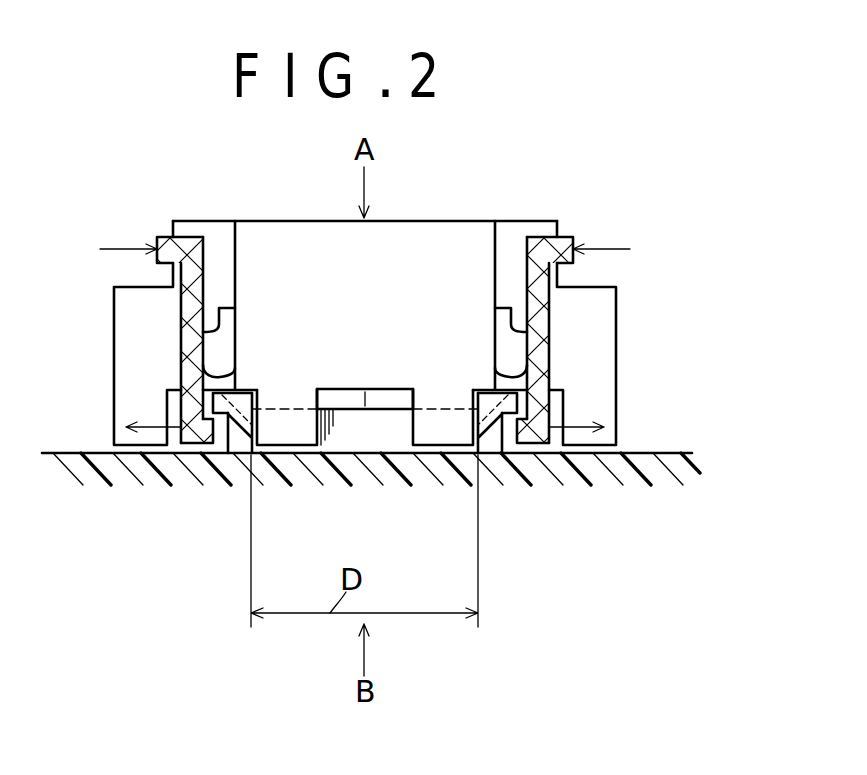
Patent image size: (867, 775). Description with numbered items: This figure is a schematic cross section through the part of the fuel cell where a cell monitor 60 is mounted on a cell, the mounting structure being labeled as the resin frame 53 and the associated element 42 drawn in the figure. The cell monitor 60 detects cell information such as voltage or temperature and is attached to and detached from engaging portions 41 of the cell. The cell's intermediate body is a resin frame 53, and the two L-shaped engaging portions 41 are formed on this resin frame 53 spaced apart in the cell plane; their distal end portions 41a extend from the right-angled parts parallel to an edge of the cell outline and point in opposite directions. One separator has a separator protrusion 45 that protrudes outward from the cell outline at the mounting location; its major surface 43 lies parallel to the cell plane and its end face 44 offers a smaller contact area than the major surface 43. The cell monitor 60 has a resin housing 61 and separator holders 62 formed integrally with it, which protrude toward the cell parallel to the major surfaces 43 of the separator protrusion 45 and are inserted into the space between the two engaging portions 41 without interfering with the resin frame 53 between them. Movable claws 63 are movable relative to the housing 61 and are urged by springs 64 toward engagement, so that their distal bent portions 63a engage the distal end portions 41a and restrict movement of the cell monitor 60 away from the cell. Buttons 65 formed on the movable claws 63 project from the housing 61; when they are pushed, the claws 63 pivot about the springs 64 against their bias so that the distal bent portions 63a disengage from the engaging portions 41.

The engaging portion 41 is at (236, 447).
The distal end portion 41a is at (218, 395).
The mating member 42 is at (401, 431).
The major surface 43 is at (333, 424).
The end face 44 is at (352, 407).
The separator protrusion 45 is at (371, 416).
The resin frame 53 is at (643, 457).
The cell monitor 60 is at (188, 220).
The resin housing 61 is at (288, 250).
The separator holder 62 is at (283, 426).
The movable claw 63 is at (192, 330).
The distal bent portion 63a is at (205, 446).
The spring 64 is at (226, 342).
The button 65 is at (170, 244).